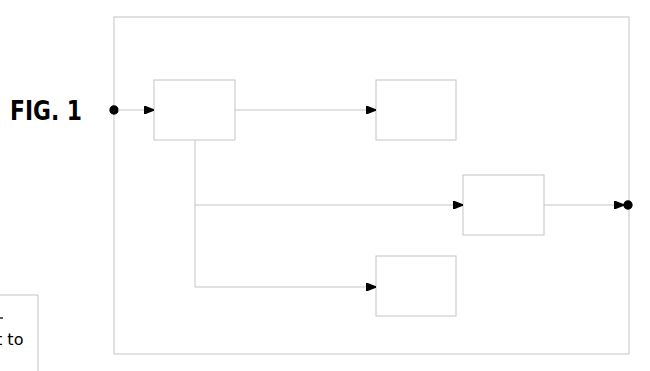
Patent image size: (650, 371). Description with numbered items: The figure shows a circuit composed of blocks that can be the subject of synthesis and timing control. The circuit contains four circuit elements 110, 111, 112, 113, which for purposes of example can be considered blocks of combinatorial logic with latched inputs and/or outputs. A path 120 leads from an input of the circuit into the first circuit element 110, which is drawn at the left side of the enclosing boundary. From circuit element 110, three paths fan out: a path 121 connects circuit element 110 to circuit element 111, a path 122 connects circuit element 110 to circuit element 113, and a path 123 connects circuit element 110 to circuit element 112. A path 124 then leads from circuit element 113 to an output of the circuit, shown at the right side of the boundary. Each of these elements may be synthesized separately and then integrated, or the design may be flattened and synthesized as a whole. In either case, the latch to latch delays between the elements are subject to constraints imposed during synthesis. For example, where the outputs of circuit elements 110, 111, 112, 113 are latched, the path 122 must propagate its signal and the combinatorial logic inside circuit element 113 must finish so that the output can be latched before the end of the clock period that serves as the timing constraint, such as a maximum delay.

The circuit element 110 is at (215, 120).
The circuit element 111 is at (437, 120).
The circuit element 112 is at (437, 296).
The circuit element 113 is at (525, 215).
The path 120 is at (133, 107).
The path 121 is at (275, 110).
The path 122 is at (275, 205).
The path 123 is at (248, 287).
The path 124 is at (592, 204).